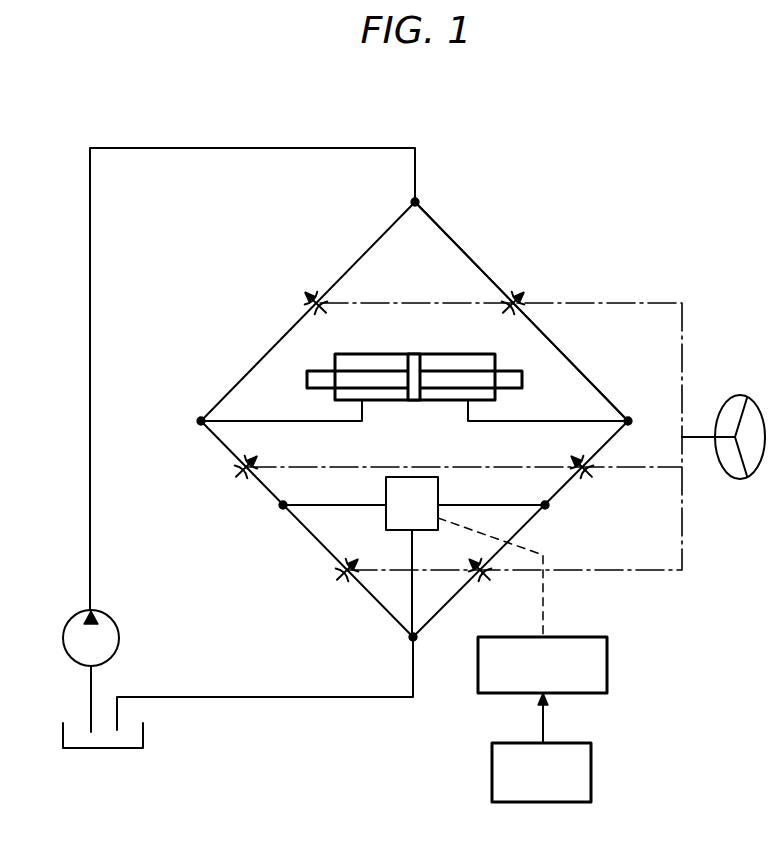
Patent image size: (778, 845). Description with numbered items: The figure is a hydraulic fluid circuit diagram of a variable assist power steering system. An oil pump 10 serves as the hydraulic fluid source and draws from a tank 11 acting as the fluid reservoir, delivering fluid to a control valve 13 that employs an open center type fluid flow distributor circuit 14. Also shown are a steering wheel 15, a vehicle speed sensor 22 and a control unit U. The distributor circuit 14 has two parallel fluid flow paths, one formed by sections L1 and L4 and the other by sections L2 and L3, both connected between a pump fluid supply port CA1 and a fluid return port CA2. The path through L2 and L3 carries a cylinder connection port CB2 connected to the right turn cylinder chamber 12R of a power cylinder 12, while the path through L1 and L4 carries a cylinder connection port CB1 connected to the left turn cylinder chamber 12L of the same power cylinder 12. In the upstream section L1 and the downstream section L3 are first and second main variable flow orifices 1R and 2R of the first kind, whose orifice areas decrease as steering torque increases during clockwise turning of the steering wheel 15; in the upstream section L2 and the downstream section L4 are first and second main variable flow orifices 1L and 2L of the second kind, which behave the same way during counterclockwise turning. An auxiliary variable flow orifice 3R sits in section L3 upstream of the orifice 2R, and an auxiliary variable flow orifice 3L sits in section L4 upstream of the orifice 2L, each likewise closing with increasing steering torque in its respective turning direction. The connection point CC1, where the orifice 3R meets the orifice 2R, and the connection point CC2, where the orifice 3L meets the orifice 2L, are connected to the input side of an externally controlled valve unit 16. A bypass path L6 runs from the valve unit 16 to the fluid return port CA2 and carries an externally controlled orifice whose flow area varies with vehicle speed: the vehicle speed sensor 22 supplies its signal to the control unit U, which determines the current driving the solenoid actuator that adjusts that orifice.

The oil pump 10 is at (119, 638).
The tank 11 is at (143, 735).
The power cylinder 12 is at (414, 382).
The left turn cylinder chamber 12L is at (387, 400).
The right turn cylinder chamber 12R is at (447, 400).
The control valve 13 is at (414, 408).
The fluid flow distributor circuit 14 is at (508, 278).
The steering wheel 15 is at (740, 480).
The externally controlled valve unit 16 is at (414, 557).
The vehicle speed sensor 22 is at (591, 772).
The control unit U is at (607, 665).
The first main variable flow orifice of the first kind 1R is at (310, 300).
The first main variable flow orifice of the second kind 1L is at (528, 300).
The second main variable flow orifice of the first kind 2R is at (484, 578).
The second main variable flow orifice of the second kind 2L is at (342, 578).
The auxiliary variable flow orifice of the first kind 3R is at (586, 473).
The auxiliary variable flow orifice of the second kind 3L is at (245, 472).
The pump fluid supply port CA1 is at (419, 201).
The fluid return port CA2 is at (410, 639).
The cylinder connection port CB1 is at (198, 419).
The cylinder connection port CB2 is at (629, 417).
The connection point CC1 is at (546, 509).
The connection point CC2 is at (279, 506).
The upstream section of flow path L1-L4 L1 is at (350, 268).
The upstream section of flow path L2-L3 L2 is at (583, 370).
The downstream section of flow path L2- L3 is at (462, 588).
The downstream section of flow path L1- L4 is at (305, 530).
The bypass path L6 is at (411, 600).